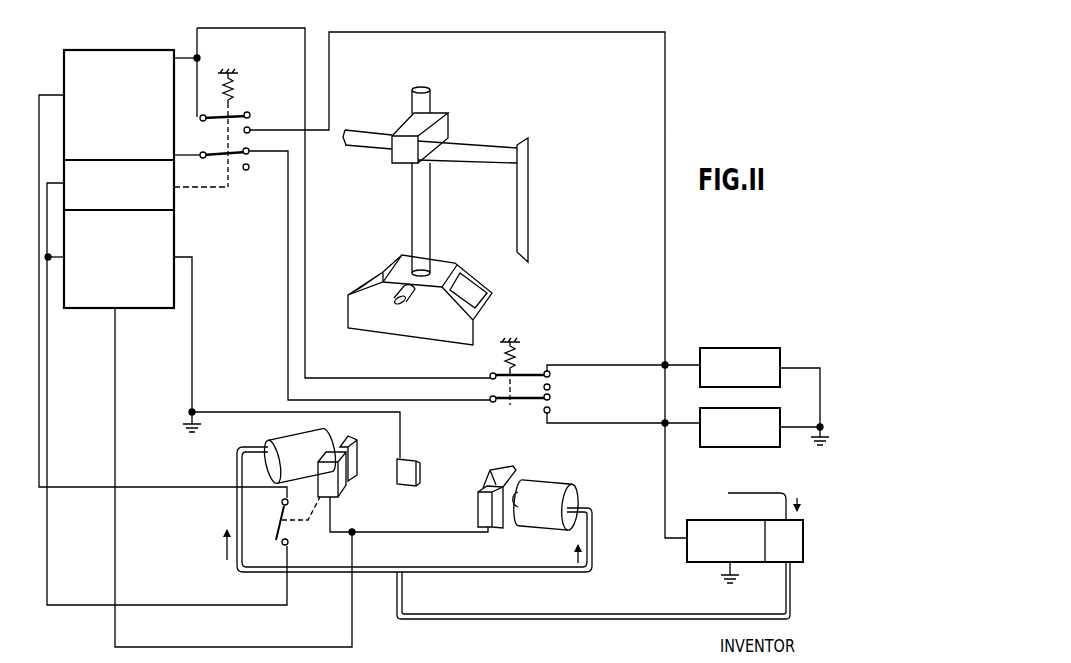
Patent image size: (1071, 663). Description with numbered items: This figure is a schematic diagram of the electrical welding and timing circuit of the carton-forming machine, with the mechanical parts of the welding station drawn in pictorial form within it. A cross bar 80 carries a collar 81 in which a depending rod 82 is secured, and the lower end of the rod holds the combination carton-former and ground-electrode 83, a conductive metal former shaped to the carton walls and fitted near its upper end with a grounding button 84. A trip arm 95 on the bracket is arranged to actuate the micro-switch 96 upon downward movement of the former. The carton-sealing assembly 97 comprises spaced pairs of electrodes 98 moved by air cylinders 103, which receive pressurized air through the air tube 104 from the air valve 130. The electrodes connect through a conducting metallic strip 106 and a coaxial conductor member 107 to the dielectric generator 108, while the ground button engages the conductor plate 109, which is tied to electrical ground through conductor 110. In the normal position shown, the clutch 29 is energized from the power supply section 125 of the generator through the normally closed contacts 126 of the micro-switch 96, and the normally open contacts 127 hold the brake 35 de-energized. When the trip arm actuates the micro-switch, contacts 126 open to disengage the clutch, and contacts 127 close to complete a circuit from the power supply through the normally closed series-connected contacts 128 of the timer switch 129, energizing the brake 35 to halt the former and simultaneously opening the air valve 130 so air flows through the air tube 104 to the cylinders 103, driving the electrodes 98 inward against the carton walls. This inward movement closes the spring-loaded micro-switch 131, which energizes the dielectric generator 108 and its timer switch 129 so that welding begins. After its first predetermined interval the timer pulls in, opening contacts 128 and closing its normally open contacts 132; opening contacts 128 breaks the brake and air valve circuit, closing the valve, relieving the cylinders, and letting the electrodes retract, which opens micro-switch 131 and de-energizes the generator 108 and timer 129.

The power supply section 125 is at (128, 52).
The normally open contacts 132 is at (277, 100).
The normally closed contacts 128 is at (250, 156).
The timer switch 129 is at (229, 196).
The dielectric generator 108 is at (178, 236).
The coaxial conductor member 107 is at (115, 405).
The conductor 110 is at (246, 411).
The collar 81 is at (448, 127).
The cross bar 80 is at (475, 150).
The depending rod 82 is at (425, 214).
The trip arm 95 is at (526, 224).
The combination carton-former and ground-electrode 83 is at (374, 322).
The grounding button 84 is at (411, 302).
The micro-switch 96 is at (521, 360).
The normally closed contacts 126 is at (551, 378).
The normally open contacts 127 is at (552, 406).
The clutch 29 is at (748, 348).
The brake 35 is at (710, 448).
The air valve 130 is at (691, 556).
The air tube 104 is at (238, 466).
The air cylinder 103 is at (295, 441).
The electrodes 98 is at (358, 455).
The carton-sealing assembly 97 is at (516, 462).
The conductor plate 109 is at (412, 458).
The conducting metallic strip 106 is at (410, 533).
The micro-switch 131 is at (279, 525).